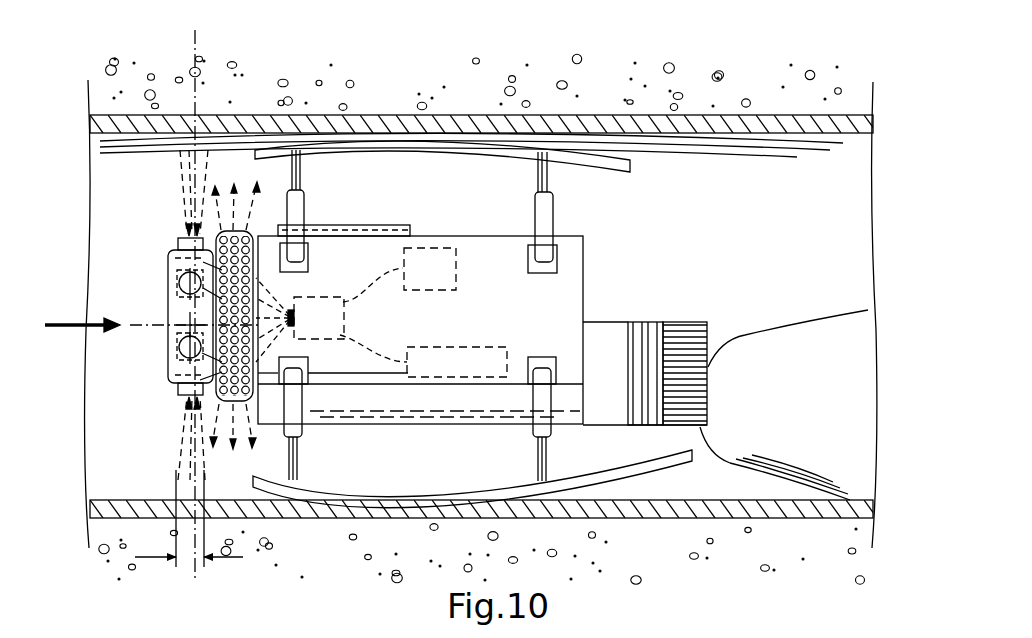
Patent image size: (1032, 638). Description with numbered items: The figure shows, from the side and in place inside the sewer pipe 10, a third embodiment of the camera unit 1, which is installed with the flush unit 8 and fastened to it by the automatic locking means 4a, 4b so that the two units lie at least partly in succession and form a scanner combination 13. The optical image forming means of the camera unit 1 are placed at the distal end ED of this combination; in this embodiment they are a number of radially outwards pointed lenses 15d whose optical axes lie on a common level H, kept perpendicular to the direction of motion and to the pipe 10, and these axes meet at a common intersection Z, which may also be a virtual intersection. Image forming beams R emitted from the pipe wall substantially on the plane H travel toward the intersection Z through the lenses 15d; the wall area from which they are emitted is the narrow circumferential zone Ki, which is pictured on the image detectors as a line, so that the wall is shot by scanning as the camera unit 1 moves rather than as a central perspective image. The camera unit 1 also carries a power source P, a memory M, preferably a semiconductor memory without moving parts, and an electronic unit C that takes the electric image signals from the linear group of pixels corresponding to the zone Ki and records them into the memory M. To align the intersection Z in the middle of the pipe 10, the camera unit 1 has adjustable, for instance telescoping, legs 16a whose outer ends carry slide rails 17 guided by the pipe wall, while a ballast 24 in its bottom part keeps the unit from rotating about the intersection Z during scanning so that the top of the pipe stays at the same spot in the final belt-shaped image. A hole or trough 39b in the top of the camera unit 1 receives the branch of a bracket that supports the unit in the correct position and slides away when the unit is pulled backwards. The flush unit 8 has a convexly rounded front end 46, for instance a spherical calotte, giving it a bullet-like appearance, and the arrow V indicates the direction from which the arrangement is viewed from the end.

The camera unit 1 is at (506, 316).
The automatic locking means 4a is at (645, 320).
The automatic locking means 4b is at (685, 320).
The flush unit 8 is at (836, 413).
The sewer pipe 10 is at (757, 130).
The scanner combination 13 is at (699, 480).
The radially outwards pointed lenses 15d is at (180, 282).
The adjustable legs 16a is at (533, 206).
The slide rails 17 is at (573, 153).
The ballast 24 is at (432, 414).
The hole or trough 39b is at (358, 227).
The front end of the flush unit 46 is at (777, 412).
The plane of the optical axes H is at (196, 42).
The distal end of the scanner combination ED is at (238, 150).
The image forming beams R is at (188, 170).
The intersection of the optical axes Z is at (185, 322).
The viewing direction V is at (122, 359).
The circumferential zone Ki is at (189, 545).
The memory M is at (399, 275).
The electronic unit C is at (300, 320).
The power source P is at (423, 356).